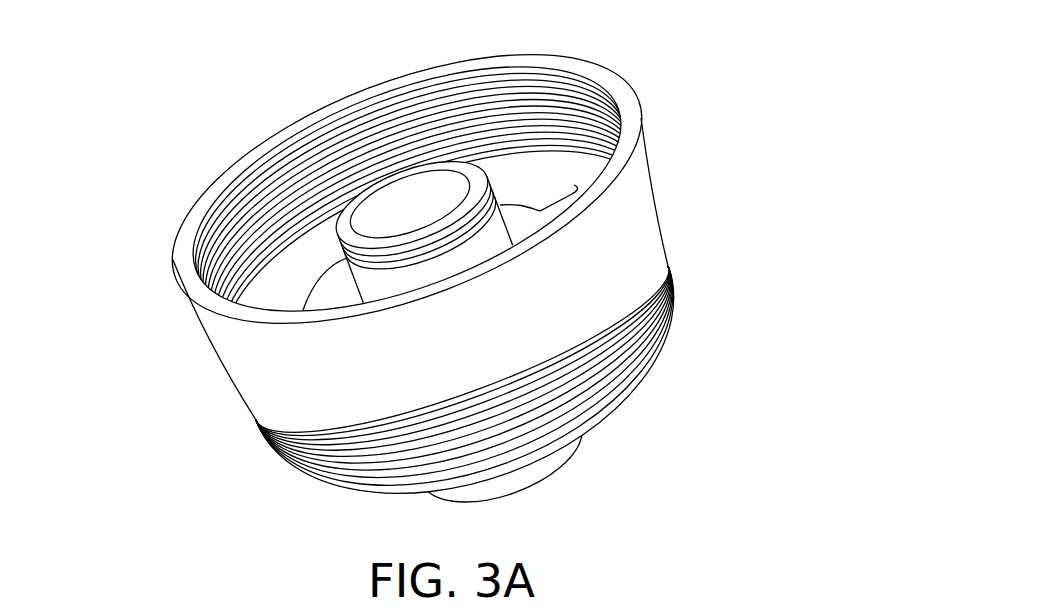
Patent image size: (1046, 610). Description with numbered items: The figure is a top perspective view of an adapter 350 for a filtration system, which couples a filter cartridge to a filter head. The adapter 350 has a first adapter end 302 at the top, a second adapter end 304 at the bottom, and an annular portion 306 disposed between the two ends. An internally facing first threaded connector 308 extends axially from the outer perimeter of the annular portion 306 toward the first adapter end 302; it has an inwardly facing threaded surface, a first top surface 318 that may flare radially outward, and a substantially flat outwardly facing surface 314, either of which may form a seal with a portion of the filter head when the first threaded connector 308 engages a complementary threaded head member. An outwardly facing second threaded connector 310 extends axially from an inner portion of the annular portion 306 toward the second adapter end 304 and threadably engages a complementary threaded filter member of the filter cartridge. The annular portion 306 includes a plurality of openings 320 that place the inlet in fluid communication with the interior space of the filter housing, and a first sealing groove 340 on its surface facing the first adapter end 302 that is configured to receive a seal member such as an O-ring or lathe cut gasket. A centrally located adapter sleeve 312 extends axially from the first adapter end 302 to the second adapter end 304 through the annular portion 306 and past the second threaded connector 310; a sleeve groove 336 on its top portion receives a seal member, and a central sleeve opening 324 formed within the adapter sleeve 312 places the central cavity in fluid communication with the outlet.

The adapter 350 is at (186, 128).
The first adapter end 302 is at (360, 84).
The first top surface 318 is at (630, 106).
The outwardly facing surface 314 is at (649, 192).
The second threaded connector 310 is at (662, 313).
The second adapter end 304 is at (512, 502).
The first threaded connector 308 is at (547, 127).
The annular portion 306 is at (192, 279).
The first sealing groove 340 is at (277, 277).
The openings 320 is at (603, 178).
The adapter sleeve 312 is at (469, 244).
The sleeve groove 336 is at (333, 238).
The central sleeve opening 324 is at (399, 192).